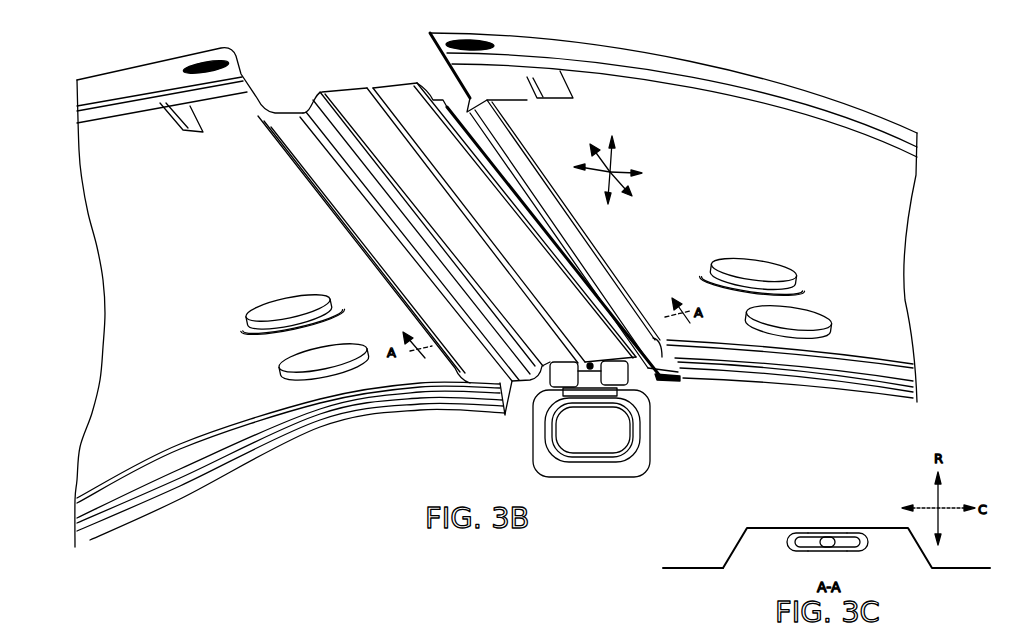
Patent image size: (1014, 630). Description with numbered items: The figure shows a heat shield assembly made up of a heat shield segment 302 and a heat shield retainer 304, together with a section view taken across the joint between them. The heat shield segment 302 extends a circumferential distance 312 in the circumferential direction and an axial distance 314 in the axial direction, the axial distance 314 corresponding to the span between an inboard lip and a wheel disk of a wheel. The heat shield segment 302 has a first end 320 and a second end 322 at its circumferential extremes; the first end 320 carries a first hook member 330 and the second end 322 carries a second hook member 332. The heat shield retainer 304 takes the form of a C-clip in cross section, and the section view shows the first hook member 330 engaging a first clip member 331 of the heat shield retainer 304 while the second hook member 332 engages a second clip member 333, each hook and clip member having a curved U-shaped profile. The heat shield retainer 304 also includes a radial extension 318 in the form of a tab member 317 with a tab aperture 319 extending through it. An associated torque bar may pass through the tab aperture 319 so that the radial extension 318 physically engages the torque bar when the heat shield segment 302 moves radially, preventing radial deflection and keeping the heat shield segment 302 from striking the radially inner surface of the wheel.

In FIG. 3B, the heat shield segment 302 is at (161, 219).
In FIG. 3C, the heat shield segment 302 is at (687, 567).
In FIG. 3B, the heat shield retainer 304 is at (535, 416).
In FIG. 3C, the heat shield retainer 304 is at (807, 552).
In FIG. 3B, the circumferential distance 312 is at (630, 178).
In FIG. 3B, the axial distance 314 is at (588, 148).
In FIG. 3B, the tab member 317 is at (648, 417).
In FIG. 3B, the radial extension 318 is at (645, 448).
In FIG. 3B, the tab aperture 319 is at (556, 431).
In FIG. 3B, the first end 320 is at (326, 78).
In FIG. 3C, the first end 320 is at (770, 527).
In FIG. 3B, the second end 322 is at (384, 76).
In FIG. 3C, the second end 322 is at (890, 527).
In FIG. 3C, the first hook member 330 is at (803, 540).
In FIG. 3C, the first clip member 331 is at (788, 542).
In FIG. 3C, the second hook member 332 is at (853, 540).
In FIG. 3C, the second clip member 333 is at (873, 543).